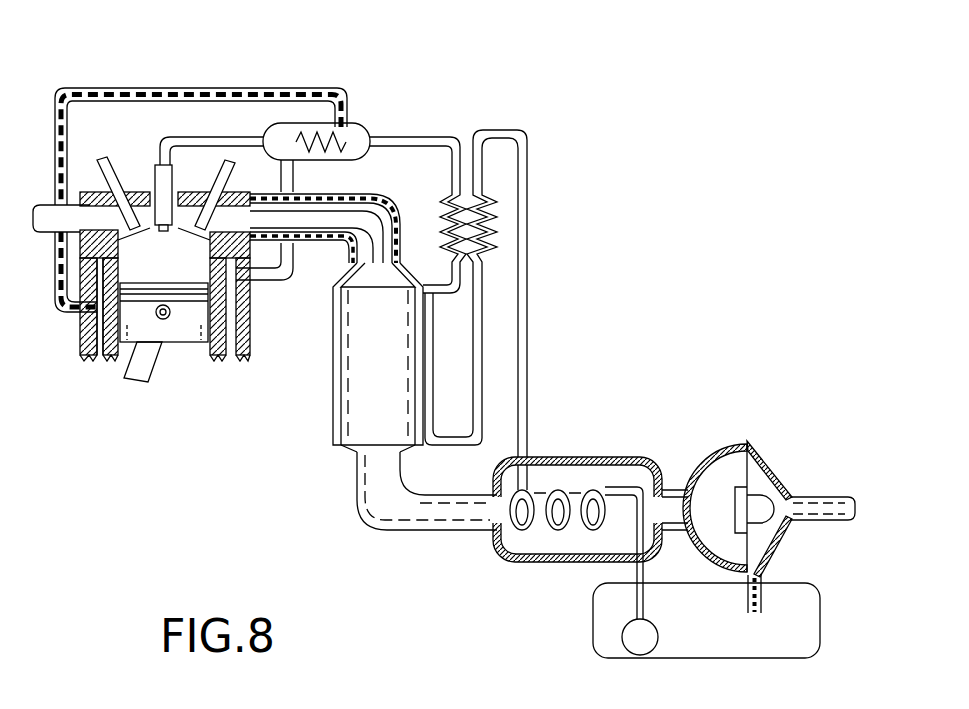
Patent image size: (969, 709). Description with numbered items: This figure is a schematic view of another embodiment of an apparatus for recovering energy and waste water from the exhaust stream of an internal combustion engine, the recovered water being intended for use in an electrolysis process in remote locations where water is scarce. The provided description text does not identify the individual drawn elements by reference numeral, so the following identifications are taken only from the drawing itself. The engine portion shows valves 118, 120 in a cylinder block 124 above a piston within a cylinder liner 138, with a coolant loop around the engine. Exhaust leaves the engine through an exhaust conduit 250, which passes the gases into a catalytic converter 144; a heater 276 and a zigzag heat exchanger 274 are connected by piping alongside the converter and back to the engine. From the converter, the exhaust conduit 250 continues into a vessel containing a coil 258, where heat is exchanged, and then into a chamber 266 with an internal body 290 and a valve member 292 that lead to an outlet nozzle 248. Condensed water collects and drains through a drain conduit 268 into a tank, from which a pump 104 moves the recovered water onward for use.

The pump 104 is at (620, 637).
The intake valve 118 is at (108, 165).
The exhaust valve 120 is at (222, 165).
The cylinder block 124 is at (248, 300).
The cylinder liner 138 is at (100, 362).
The catalytic converter 144 is at (333, 392).
The outlet nozzle 248 is at (837, 503).
The exhaust conduit 250 is at (293, 207).
The heat exchanger coil 258 is at (590, 478).
The mixing chamber 266 is at (707, 460).
The drain conduit 268 is at (767, 598).
The exhaust heat exchanger 274 is at (442, 203).
The heater 276 is at (363, 132).
The chamber body 290 is at (730, 473).
The valve member 292 is at (767, 500).